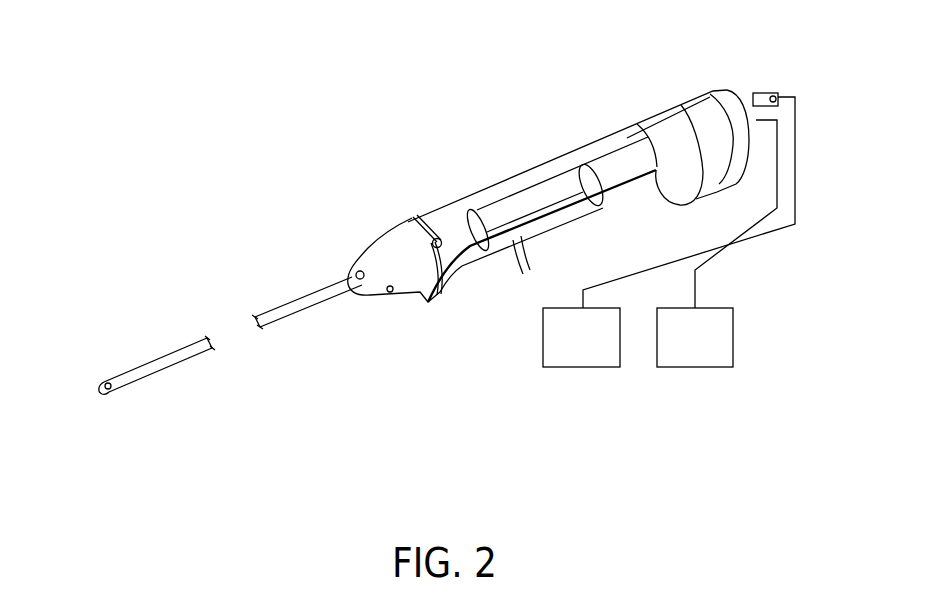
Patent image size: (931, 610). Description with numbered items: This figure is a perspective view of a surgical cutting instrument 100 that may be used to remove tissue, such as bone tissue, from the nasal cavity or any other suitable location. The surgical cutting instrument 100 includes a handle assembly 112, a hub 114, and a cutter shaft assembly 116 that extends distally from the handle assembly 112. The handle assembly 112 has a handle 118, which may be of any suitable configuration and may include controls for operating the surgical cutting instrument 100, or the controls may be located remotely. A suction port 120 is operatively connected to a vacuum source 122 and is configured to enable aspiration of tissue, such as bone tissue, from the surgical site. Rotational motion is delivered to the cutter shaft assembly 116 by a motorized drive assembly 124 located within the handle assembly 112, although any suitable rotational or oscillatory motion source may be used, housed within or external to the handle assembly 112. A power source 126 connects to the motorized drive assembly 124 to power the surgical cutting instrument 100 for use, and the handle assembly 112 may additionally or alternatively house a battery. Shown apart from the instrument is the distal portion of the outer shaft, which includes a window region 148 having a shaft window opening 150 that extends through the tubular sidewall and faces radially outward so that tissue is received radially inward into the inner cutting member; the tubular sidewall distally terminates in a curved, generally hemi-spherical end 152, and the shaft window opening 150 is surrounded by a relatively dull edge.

The surgical cutting instrument 100 is at (684, 48).
The handle assembly 112 is at (529, 168).
The hub 114 is at (372, 253).
The cutter shaft assembly 116 is at (287, 299).
The handle 118 is at (599, 216).
The suction port 120 is at (779, 92).
The vacuum source 122 is at (720, 308).
The motorized drive assembly 124 is at (526, 246).
The power source 126 is at (607, 308).
The window region 148 is at (115, 377).
The shaft window opening 150 is at (112, 381).
The hemi-spherical end 152 is at (104, 390).